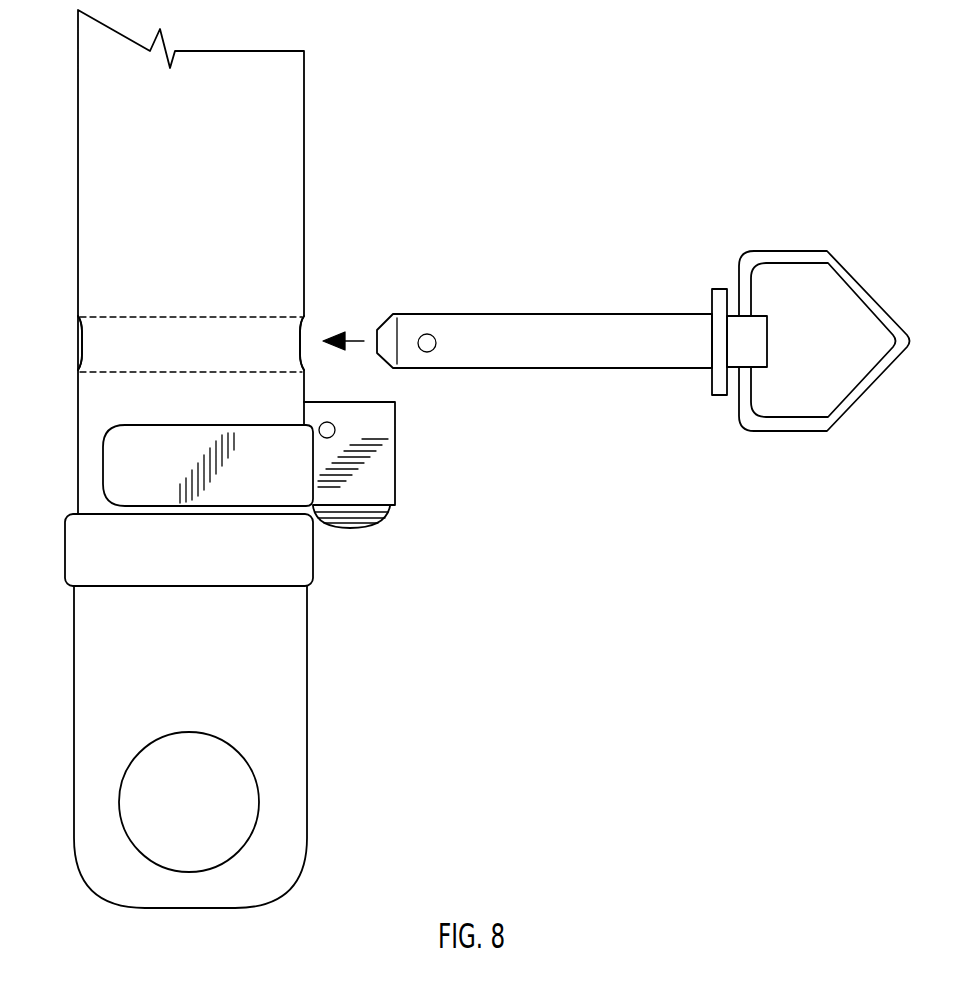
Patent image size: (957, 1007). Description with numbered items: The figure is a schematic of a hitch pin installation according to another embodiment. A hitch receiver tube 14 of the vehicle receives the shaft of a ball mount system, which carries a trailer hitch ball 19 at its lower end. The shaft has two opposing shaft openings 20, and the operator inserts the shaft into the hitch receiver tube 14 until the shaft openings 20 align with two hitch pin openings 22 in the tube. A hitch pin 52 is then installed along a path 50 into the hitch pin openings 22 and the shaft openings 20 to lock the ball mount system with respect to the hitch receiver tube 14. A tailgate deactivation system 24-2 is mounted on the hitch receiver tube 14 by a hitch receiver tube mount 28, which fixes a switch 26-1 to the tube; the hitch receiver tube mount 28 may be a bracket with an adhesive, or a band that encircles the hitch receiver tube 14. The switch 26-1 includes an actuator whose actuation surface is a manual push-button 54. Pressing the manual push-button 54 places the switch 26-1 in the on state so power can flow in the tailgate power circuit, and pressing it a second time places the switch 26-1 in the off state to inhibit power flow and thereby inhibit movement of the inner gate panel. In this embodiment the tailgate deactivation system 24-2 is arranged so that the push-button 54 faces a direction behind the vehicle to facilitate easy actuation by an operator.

The hitch receiver tube 14 is at (78, 200).
The trailer hitch ball 19 is at (261, 806).
The shaft openings 20 is at (88, 357).
The hitch pin openings 22 is at (80, 345).
The tailgate deactivation system 24-2 is at (280, 483).
The switch 26-1 is at (378, 486).
The hitch receiver tube mount 28 is at (125, 468).
The path 50 is at (352, 338).
The hitch pin 52 is at (516, 314).
The manual push-button 54 is at (352, 527).